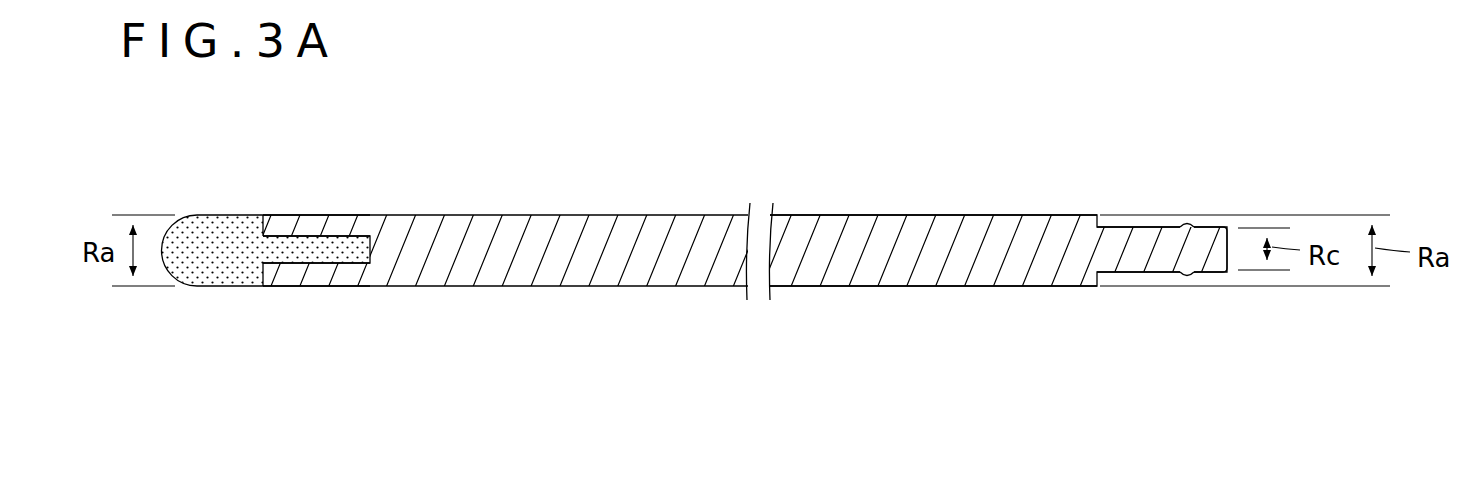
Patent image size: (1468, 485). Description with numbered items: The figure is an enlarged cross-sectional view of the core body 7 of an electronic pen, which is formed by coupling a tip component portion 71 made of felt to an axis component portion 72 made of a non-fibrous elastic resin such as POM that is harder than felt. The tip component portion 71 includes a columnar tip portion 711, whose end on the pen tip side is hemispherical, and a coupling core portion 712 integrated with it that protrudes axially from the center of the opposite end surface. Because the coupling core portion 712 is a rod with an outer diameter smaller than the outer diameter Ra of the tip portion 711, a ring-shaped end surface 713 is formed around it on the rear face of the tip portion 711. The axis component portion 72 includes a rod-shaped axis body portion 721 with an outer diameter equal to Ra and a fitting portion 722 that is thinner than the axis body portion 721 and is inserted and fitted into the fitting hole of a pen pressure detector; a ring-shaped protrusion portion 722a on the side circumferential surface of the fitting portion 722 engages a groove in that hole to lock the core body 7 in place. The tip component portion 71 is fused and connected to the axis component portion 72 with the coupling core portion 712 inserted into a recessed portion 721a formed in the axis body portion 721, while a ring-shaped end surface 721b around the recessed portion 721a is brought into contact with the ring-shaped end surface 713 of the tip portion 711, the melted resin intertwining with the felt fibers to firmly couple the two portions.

The core body 7 is at (518, 211).
The tip component portion 71 is at (333, 138).
The tip portion 711 is at (208, 223).
The coupling core portion 712 is at (282, 243).
The ring-shaped end surface 713 is at (270, 271).
The axis component portion 72 is at (1172, 157).
The axis body portion 721 is at (1000, 225).
The recessed portion 721a is at (335, 233).
The ring-shaped end surface 721b is at (265, 272).
The fitting portion 722 is at (1117, 233).
The ring-shaped protrusion portion 722a is at (1187, 275).